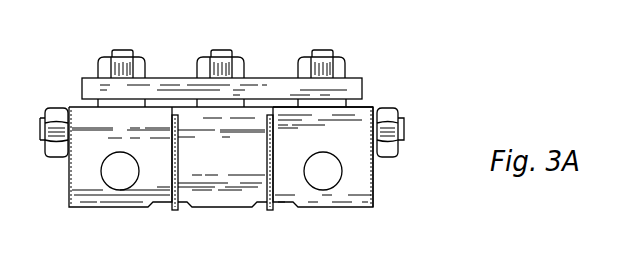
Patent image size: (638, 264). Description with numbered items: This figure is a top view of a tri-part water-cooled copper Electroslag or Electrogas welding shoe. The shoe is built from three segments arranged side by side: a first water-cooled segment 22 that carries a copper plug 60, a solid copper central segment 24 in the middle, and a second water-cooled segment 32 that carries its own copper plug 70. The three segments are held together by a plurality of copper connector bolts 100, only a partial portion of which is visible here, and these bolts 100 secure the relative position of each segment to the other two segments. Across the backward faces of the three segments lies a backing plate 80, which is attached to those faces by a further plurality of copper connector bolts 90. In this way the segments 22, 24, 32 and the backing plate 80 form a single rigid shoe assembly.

The first water-cooled segment 22 is at (85, 123).
The solid copper central segment 24 is at (205, 187).
The second water-cooled segment 32 is at (360, 117).
The copper plug 60 is at (110, 180).
The copper plug 70 is at (327, 182).
The backing plate 80 is at (343, 90).
The copper connector bolts 90 is at (299, 62).
The copper connector bolts 100 is at (404, 137).